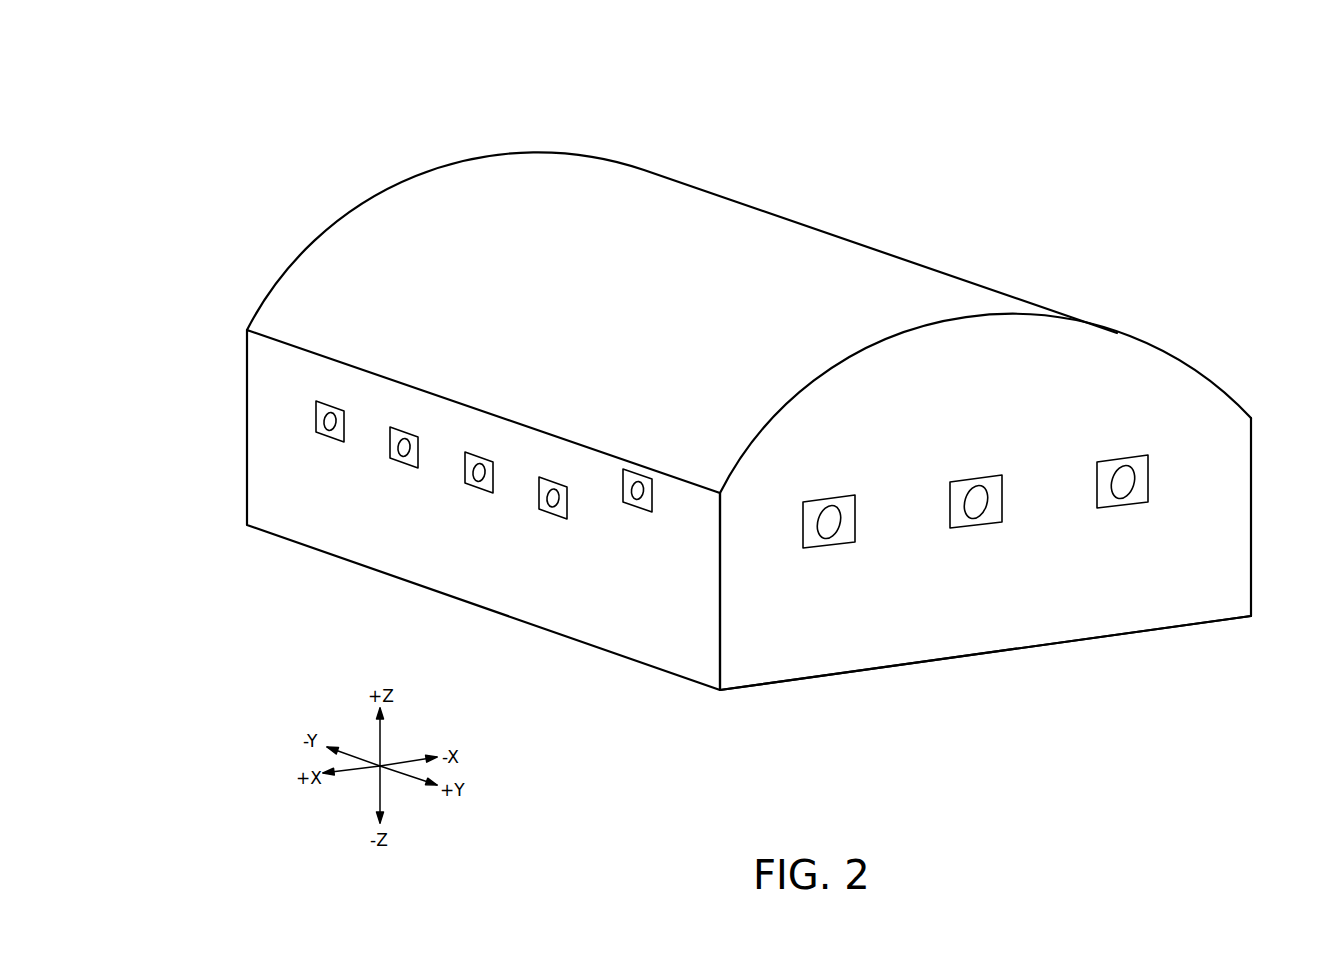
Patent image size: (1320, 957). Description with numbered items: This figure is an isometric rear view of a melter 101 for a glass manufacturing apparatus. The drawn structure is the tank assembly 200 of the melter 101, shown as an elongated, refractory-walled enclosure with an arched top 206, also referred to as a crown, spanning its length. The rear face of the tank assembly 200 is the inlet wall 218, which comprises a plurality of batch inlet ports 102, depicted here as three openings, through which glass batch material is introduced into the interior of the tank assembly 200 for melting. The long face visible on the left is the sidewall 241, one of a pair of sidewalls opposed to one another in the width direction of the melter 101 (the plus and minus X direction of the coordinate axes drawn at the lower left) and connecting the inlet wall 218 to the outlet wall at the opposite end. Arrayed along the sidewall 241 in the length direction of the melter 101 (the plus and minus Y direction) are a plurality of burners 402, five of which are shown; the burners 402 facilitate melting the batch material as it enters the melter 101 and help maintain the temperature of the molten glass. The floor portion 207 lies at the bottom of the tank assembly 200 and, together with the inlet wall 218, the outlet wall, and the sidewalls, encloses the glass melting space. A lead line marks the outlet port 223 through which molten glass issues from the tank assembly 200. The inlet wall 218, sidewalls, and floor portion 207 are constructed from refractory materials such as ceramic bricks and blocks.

The melter 101 is at (427, 79).
The tank assembly 200 is at (755, 453).
The top 206 is at (822, 252).
The sidewall 241 is at (268, 405).
The inlet wall 218 is at (1232, 535).
The outlet port 223 is at (985, 657).
The floor portion 207 is at (751, 653).
The burners 402 is at (328, 439).
The batch inlet ports 102 is at (829, 548).